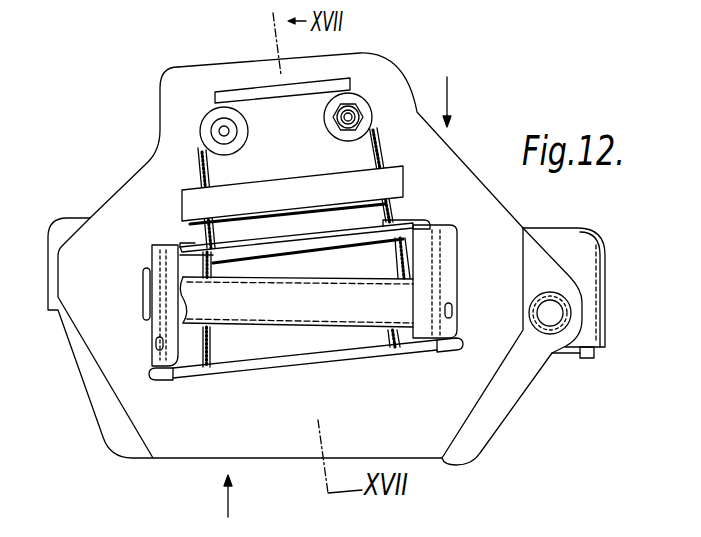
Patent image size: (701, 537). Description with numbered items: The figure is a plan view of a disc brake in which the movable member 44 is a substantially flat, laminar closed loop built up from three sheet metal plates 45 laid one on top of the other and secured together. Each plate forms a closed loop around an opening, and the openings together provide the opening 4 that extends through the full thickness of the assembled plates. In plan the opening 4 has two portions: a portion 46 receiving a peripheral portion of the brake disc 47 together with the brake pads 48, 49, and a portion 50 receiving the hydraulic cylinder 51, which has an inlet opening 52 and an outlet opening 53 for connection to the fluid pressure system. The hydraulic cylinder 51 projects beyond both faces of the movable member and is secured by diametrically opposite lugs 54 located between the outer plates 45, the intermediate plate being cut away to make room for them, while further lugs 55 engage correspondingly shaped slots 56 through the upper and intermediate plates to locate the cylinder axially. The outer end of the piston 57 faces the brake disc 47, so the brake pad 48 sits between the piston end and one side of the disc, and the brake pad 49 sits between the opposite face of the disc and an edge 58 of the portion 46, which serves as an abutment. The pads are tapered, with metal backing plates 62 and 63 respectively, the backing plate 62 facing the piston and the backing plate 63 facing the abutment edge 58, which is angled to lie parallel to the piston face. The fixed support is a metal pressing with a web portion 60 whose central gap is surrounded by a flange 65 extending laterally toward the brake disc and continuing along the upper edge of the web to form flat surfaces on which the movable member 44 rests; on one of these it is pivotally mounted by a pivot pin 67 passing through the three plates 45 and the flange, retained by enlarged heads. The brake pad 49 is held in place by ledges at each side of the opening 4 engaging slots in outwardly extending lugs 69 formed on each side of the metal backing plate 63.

The opening 4 is at (417, 262).
The movable member 44 is at (432, 407).
The sheet metal plates 45 is at (434, 452).
The portion of the opening 46 is at (193, 350).
The brake disc 47 is at (348, 298).
The brake pad 48 is at (389, 262).
The brake pad 49 is at (265, 343).
The portion of the opening 50 is at (385, 153).
The hydraulic cylinder 51 is at (228, 166).
The inlet opening 52 is at (213, 128).
The outlet opening 53 is at (360, 100).
The lugs 54 is at (195, 244).
The lugs 55 is at (195, 198).
The slots 56 is at (177, 212).
The piston 57 is at (285, 244).
The edge 58 is at (318, 367).
The web portion 60 is at (606, 306).
The metal backing plate 62 is at (193, 257).
The metal backing plate 63 is at (230, 370).
The flange 65 is at (558, 236).
The pivot pin 67 is at (548, 312).
The lugs 69 is at (155, 375).